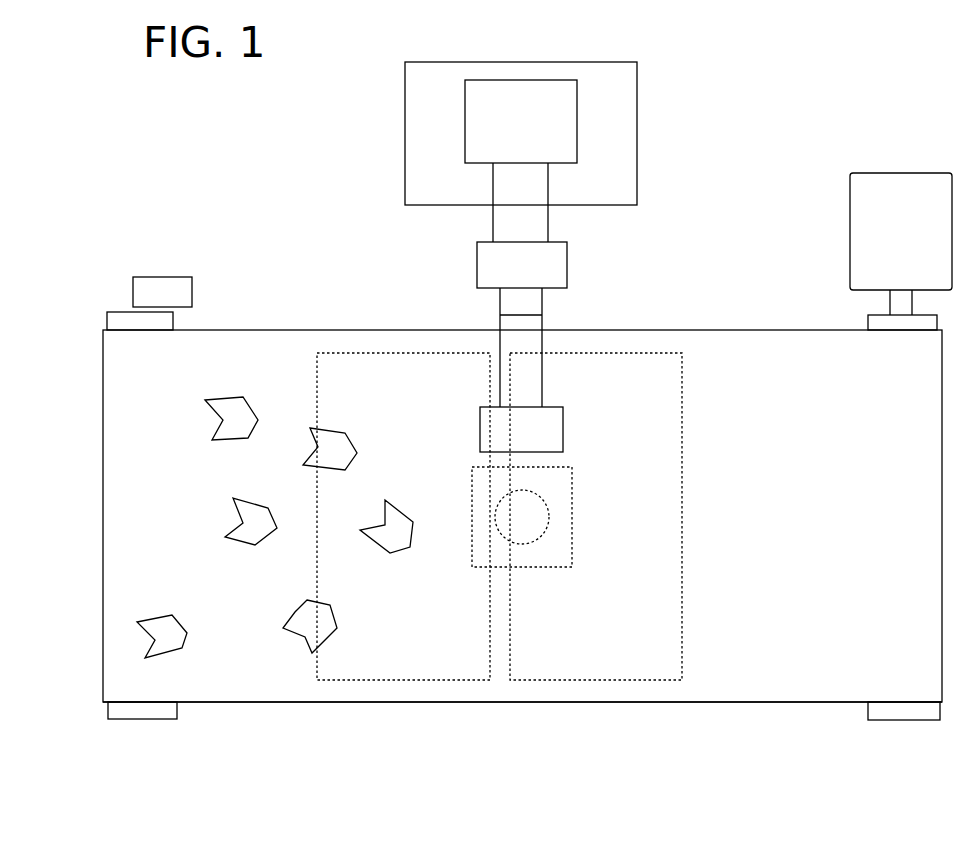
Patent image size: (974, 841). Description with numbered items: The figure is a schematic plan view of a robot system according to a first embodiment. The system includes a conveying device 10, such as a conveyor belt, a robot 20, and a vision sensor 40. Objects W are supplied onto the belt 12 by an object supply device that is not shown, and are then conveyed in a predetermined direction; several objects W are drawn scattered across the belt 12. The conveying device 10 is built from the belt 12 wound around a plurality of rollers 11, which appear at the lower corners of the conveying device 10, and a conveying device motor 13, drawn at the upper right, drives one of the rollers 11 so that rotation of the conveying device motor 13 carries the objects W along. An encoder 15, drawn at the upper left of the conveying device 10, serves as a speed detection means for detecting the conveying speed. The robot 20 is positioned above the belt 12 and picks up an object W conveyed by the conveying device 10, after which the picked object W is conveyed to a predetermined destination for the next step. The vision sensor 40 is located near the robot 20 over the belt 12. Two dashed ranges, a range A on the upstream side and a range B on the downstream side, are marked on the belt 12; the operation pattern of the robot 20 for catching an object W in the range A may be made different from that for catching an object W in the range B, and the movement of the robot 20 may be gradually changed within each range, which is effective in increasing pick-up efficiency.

The conveying device 10 is at (678, 722).
The rollers 11 is at (140, 719).
The belt 12 is at (483, 703).
The conveying device motor 13 is at (900, 172).
The encoder 15 is at (158, 276).
The robot 20 is at (637, 128).
The vision sensor 40 is at (572, 517).
The range A is at (382, 681).
The range B is at (585, 681).
The object W is at (230, 398).